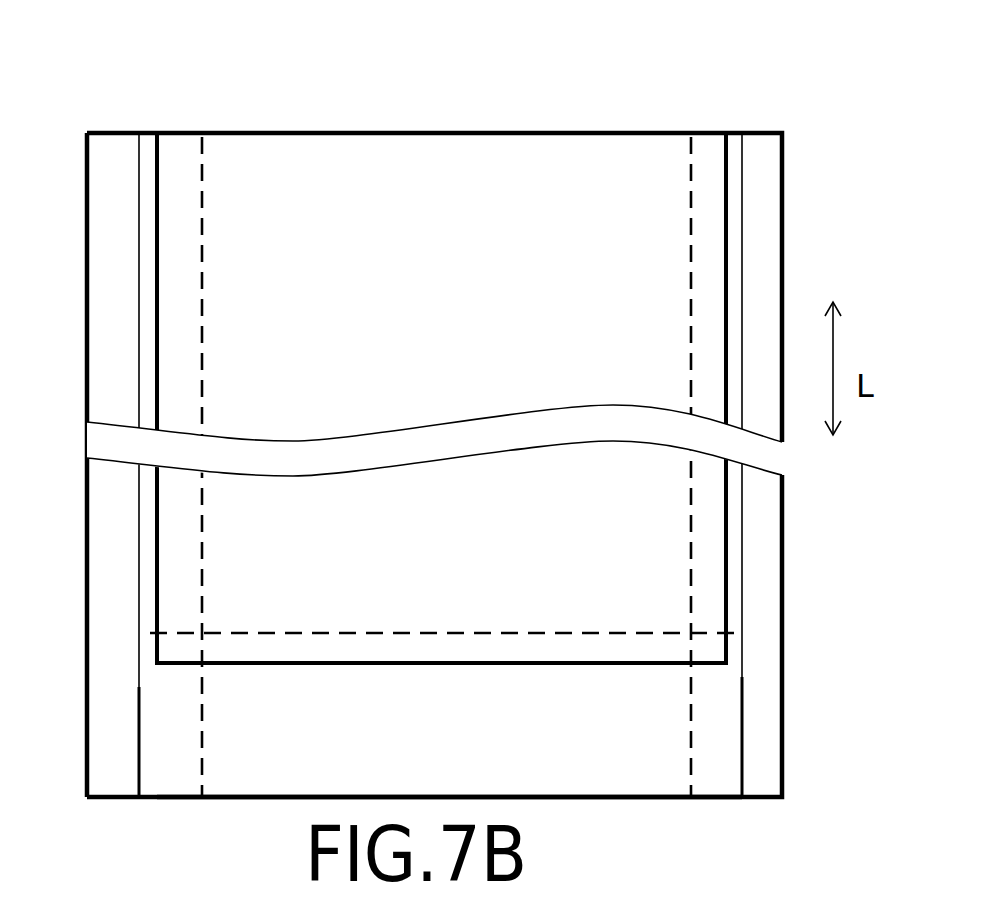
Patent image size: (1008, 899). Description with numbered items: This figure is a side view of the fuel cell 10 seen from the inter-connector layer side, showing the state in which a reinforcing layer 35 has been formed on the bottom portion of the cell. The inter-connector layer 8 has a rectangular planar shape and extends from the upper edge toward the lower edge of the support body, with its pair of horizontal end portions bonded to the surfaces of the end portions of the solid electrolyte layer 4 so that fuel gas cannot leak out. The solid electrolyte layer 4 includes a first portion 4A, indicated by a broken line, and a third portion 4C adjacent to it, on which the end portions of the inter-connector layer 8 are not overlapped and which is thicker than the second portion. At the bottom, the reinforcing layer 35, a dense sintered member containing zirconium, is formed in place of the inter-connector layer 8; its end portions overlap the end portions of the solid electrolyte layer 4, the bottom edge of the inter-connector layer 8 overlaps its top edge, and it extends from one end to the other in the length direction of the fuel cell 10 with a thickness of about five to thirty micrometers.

The solid electrolyte layer 4 is at (102, 262).
The first portion 4A is at (167, 152).
The third portion 4C is at (144, 142).
The inter-connector layer 8 is at (303, 233).
The fuel cell 10 is at (496, 132).
The reinforcing layer 35 is at (670, 787).